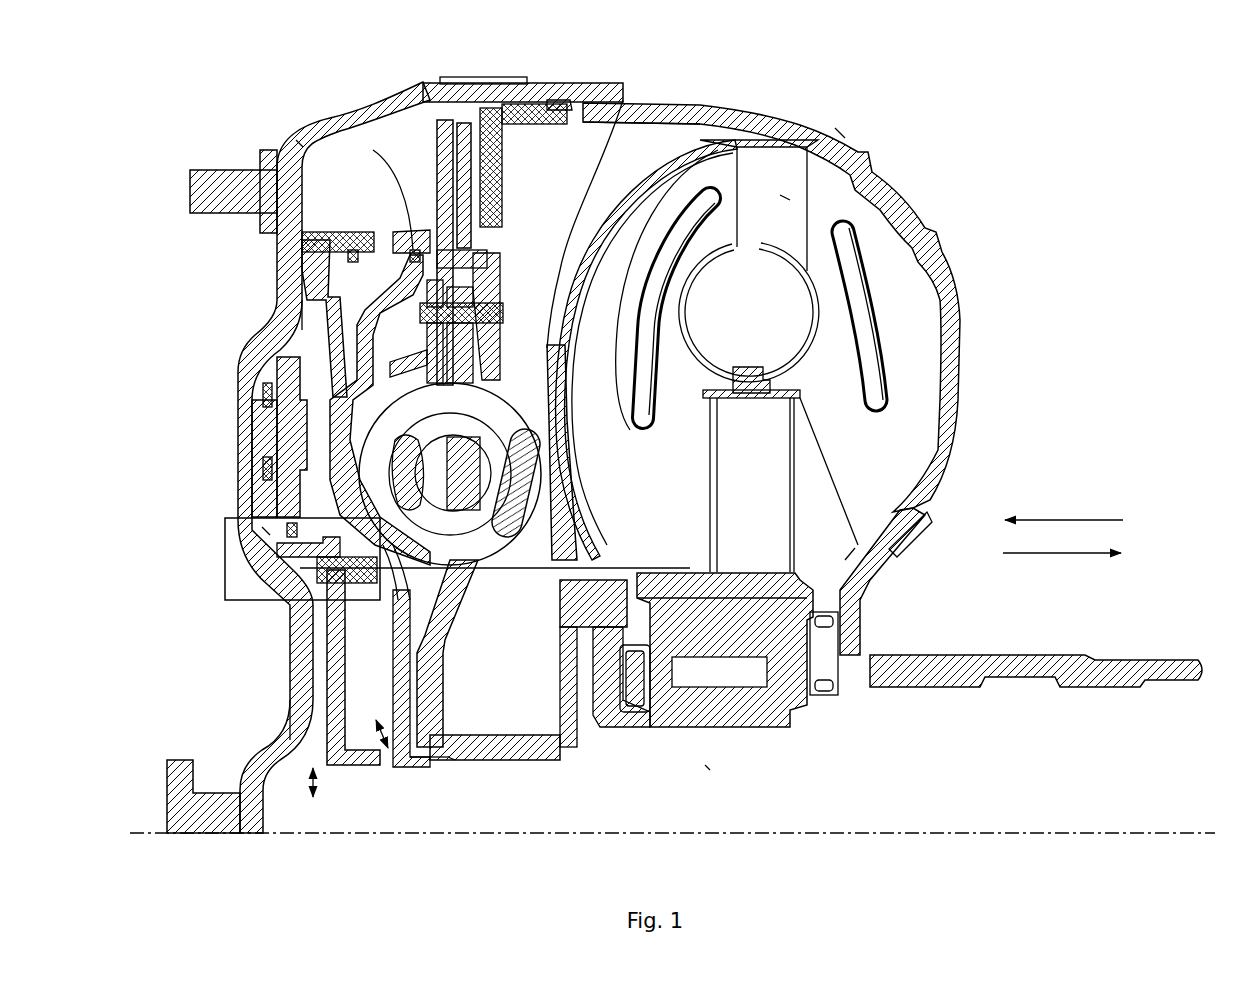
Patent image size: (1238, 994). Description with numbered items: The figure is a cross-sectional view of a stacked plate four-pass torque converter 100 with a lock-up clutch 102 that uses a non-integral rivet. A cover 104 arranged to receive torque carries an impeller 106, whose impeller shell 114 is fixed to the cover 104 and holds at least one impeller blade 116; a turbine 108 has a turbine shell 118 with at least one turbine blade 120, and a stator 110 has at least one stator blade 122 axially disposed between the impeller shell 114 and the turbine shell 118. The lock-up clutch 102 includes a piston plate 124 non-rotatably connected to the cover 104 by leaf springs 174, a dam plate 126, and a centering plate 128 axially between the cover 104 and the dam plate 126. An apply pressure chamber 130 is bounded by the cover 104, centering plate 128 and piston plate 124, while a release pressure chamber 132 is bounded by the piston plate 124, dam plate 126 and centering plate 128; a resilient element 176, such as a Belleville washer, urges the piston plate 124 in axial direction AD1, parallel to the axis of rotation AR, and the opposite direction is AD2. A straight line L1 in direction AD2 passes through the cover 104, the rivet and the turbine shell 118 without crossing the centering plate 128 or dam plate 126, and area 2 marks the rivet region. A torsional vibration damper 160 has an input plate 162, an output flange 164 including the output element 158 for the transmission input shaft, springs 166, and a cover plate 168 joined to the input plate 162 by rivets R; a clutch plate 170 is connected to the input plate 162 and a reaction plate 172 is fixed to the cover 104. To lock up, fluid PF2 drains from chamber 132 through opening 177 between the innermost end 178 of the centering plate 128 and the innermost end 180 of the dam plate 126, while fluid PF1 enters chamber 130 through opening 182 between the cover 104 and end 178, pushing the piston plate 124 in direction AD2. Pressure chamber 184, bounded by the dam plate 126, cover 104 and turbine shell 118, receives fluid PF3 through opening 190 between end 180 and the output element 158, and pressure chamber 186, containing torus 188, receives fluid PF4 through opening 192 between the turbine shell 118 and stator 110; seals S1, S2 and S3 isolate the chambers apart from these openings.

The four-pass torque converter 100 is at (1080, 80).
The lock-up clutch 102 is at (294, 330).
The cover 104 is at (295, 130).
The impeller 106 is at (905, 190).
The turbine 108 is at (665, 148).
The stator 110 is at (775, 372).
The impeller shell 114 is at (840, 133).
The impeller blade 116 is at (850, 473).
The turbine shell 118 is at (710, 140).
The turbine blade 120 is at (597, 473).
The stator blade 122 is at (760, 438).
The piston plate 124 is at (275, 497).
The dam plate 126 is at (340, 590).
The centering plate 128 is at (323, 627).
The apply pressure chamber 130 is at (273, 358).
The release pressure chamber 132 is at (317, 430).
The output element 158 is at (548, 752).
The torsional vibration damper 160 is at (515, 266).
The input plate 162 is at (493, 260).
The output flange 164 is at (452, 613).
The spring 166 is at (518, 517).
The cover plate 168 is at (432, 270).
The clutch plate 170 is at (462, 120).
The reaction plate 172 is at (548, 115).
The leaf springs 174 is at (266, 467).
The resilient element 176 is at (328, 293).
The opening 177 is at (387, 760).
The radially innermost end of centering plate 178 is at (347, 767).
The radially innermost end of dam plate 180 is at (427, 753).
The opening 182 is at (300, 743).
The pressure chamber 184 is at (623, 157).
The pressure chamber 186 is at (785, 190).
The torus 188 is at (748, 287).
The opening 190 is at (450, 757).
The opening 192 is at (664, 717).
The area 2 is at (225, 545).
The rivets R is at (551, 300).
The straight line L1 is at (650, 568).
The seal S1 is at (262, 527).
The seal S2 is at (303, 140).
The seal S3 is at (350, 232).
The axis of rotation AR is at (1073, 835).
The axial direction AD1 is at (1050, 520).
The axial direction AD2 is at (1060, 553).
The pressurized fluid PF1 is at (313, 800).
The pressurized fluid PF2 is at (378, 748).
The pressurized fluid PF3 is at (452, 758).
The pressurized fluid PF4 is at (708, 768).